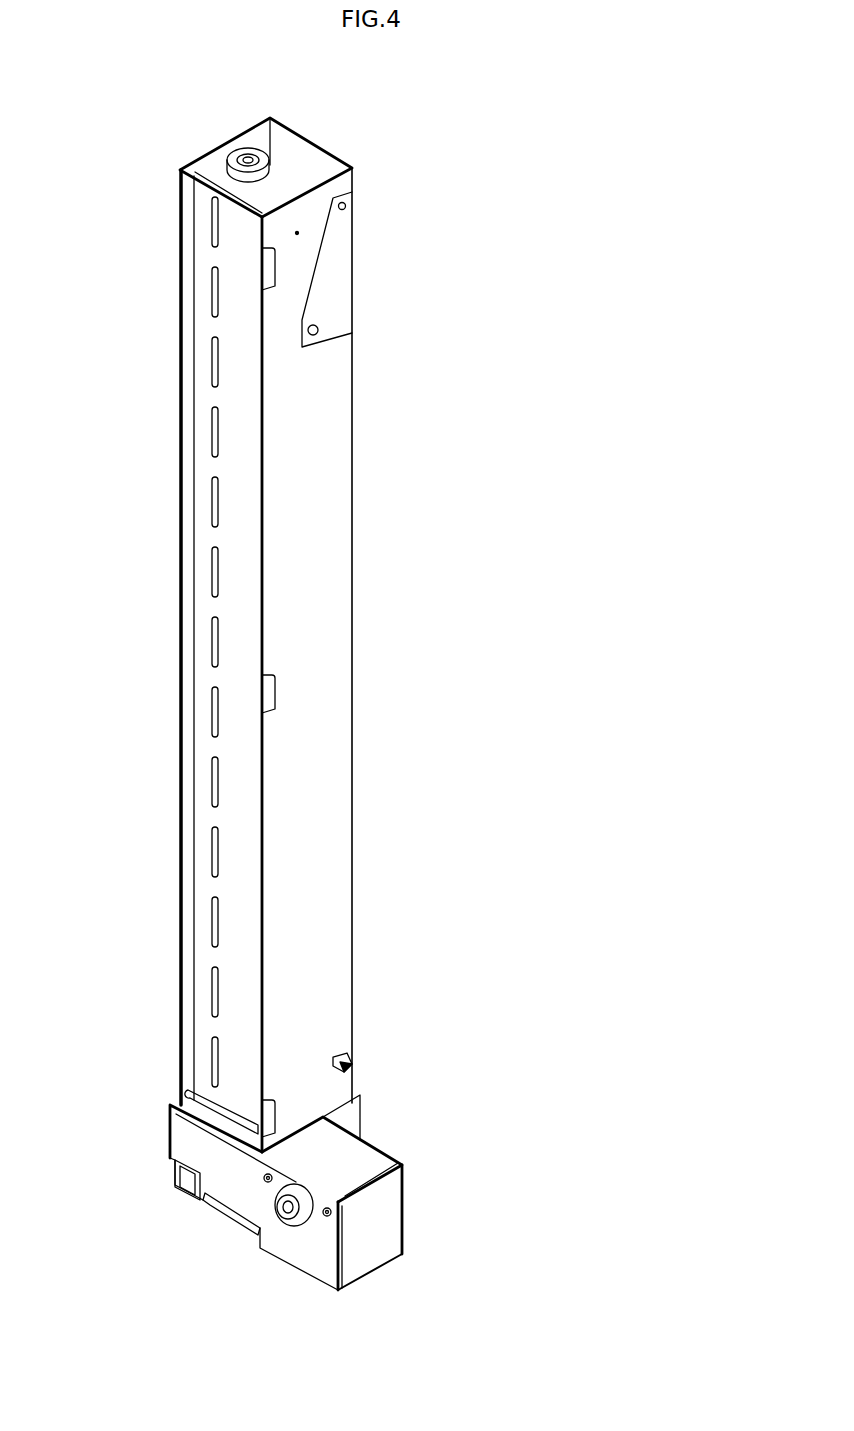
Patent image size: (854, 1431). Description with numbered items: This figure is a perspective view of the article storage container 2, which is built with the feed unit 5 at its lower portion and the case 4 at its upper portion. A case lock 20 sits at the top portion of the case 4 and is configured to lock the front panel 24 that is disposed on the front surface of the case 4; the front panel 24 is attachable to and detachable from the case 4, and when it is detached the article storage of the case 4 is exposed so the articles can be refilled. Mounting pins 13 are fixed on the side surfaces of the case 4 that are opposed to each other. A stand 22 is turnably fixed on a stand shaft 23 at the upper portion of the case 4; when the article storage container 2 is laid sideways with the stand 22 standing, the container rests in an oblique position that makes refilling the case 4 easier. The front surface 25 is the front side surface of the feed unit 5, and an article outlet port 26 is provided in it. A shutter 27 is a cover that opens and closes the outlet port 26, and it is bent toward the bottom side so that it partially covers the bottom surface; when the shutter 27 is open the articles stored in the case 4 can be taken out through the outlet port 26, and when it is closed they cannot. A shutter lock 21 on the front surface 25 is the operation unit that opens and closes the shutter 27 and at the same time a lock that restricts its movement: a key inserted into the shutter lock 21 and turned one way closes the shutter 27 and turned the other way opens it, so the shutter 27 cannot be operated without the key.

The article storage container 2 is at (427, 523).
The case 4 is at (328, 787).
The feed unit 5 is at (368, 1172).
The mounting pin 13 is at (348, 1058).
The case lock 20 is at (240, 156).
The shutter lock 21 is at (290, 1212).
The stand 22 is at (345, 318).
The stand shaft 23 is at (347, 205).
The front panel 24 is at (205, 1025).
The front surface 25 is at (180, 1125).
The article outlet port 26 is at (210, 1205).
The shutter 27 is at (245, 1215).